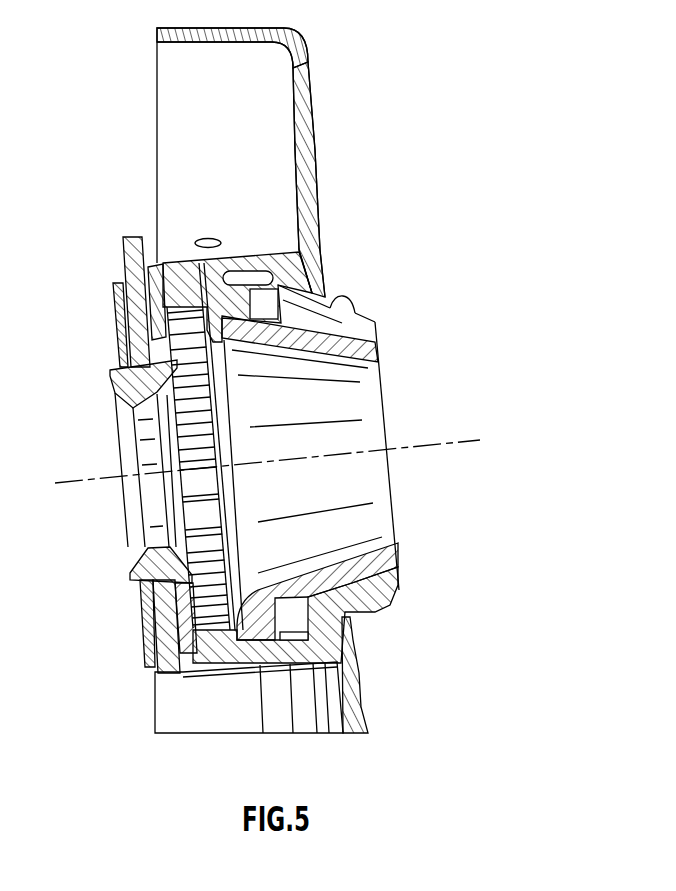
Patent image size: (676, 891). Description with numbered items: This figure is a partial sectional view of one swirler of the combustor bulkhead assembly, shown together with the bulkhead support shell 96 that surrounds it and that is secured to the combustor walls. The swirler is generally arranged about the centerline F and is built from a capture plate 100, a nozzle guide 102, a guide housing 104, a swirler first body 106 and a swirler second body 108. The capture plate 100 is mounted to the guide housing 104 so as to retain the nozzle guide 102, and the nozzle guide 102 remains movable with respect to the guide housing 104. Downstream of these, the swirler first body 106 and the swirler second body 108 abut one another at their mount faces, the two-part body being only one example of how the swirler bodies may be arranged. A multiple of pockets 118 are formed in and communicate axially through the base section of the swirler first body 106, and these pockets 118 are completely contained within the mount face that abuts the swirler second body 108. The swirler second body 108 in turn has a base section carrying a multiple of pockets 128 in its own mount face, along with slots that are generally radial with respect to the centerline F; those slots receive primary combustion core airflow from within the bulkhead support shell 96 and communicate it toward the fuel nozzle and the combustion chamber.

The bulkhead support shell 96 is at (312, 100).
The capture plate 100 is at (117, 317).
The nozzle guide 102 is at (133, 250).
The guide housing 104 is at (153, 267).
The swirler first body 106 is at (368, 348).
The swirler second body 108 is at (345, 298).
The pockets 118 is at (233, 271).
The pockets 128 is at (233, 275).
The centerline F is at (433, 448).